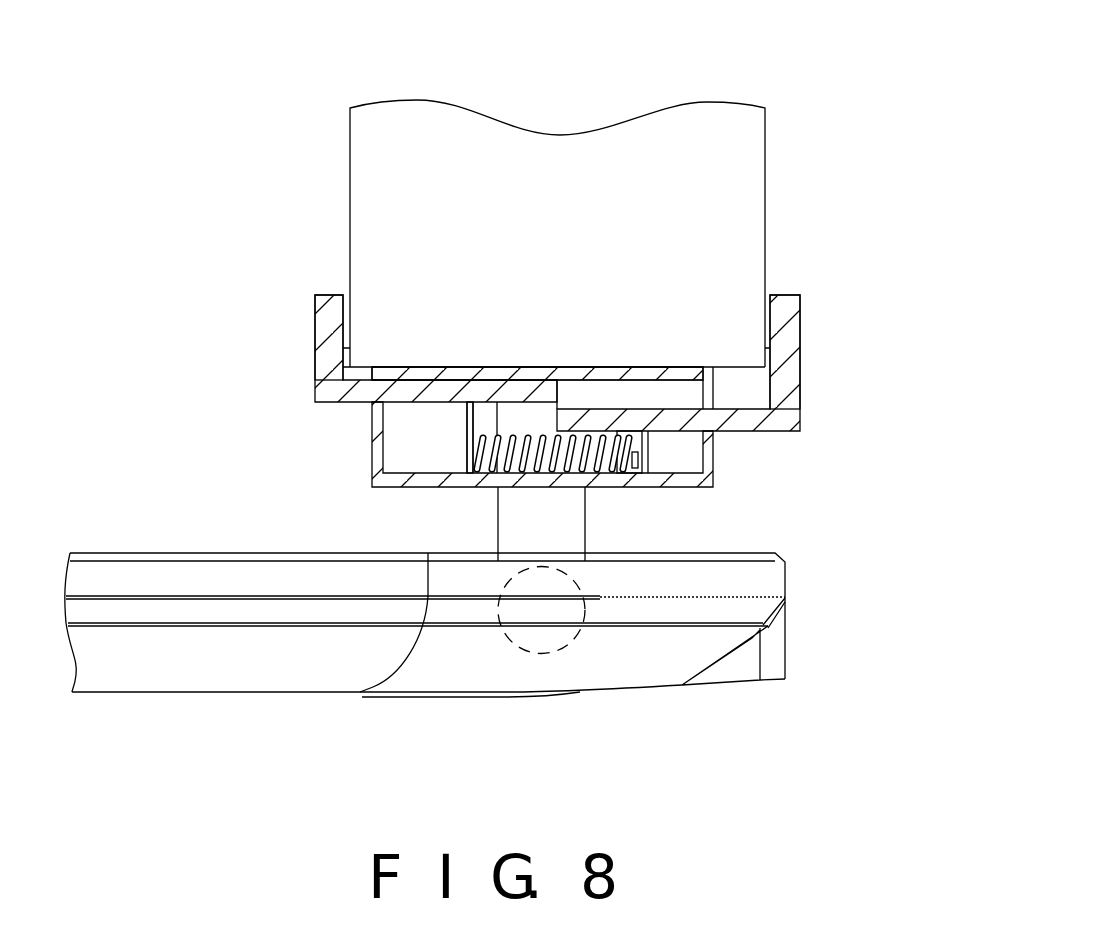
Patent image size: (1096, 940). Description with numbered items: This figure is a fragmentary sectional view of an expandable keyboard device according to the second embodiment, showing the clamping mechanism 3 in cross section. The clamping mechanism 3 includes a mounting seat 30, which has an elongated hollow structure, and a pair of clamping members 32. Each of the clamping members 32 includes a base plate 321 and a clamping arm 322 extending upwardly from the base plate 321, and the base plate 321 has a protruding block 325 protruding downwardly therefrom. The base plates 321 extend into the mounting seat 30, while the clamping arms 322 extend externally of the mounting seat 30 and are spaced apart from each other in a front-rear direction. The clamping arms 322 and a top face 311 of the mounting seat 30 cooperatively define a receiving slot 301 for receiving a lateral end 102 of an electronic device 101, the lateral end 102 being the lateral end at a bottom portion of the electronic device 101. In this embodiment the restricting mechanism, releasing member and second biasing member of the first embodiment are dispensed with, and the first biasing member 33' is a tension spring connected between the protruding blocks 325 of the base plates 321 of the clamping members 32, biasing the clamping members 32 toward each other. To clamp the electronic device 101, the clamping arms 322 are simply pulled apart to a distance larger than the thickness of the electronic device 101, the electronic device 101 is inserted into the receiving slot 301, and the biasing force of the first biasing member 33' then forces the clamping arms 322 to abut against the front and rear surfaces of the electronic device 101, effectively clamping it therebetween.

The electronic device 101 is at (713, 160).
The lateral end 102 is at (398, 367).
The top face 311 is at (537, 373).
The clamping mechanism 3 is at (558, 346).
The clamping members 32 is at (558, 354).
The clamping arm 322 is at (315, 353).
The base plate 321 is at (355, 397).
The receiving slot 301 is at (682, 358).
The mounting seat 30 is at (372, 457).
The protruding block 325 is at (473, 443).
The first biasing member 33' is at (568, 477).